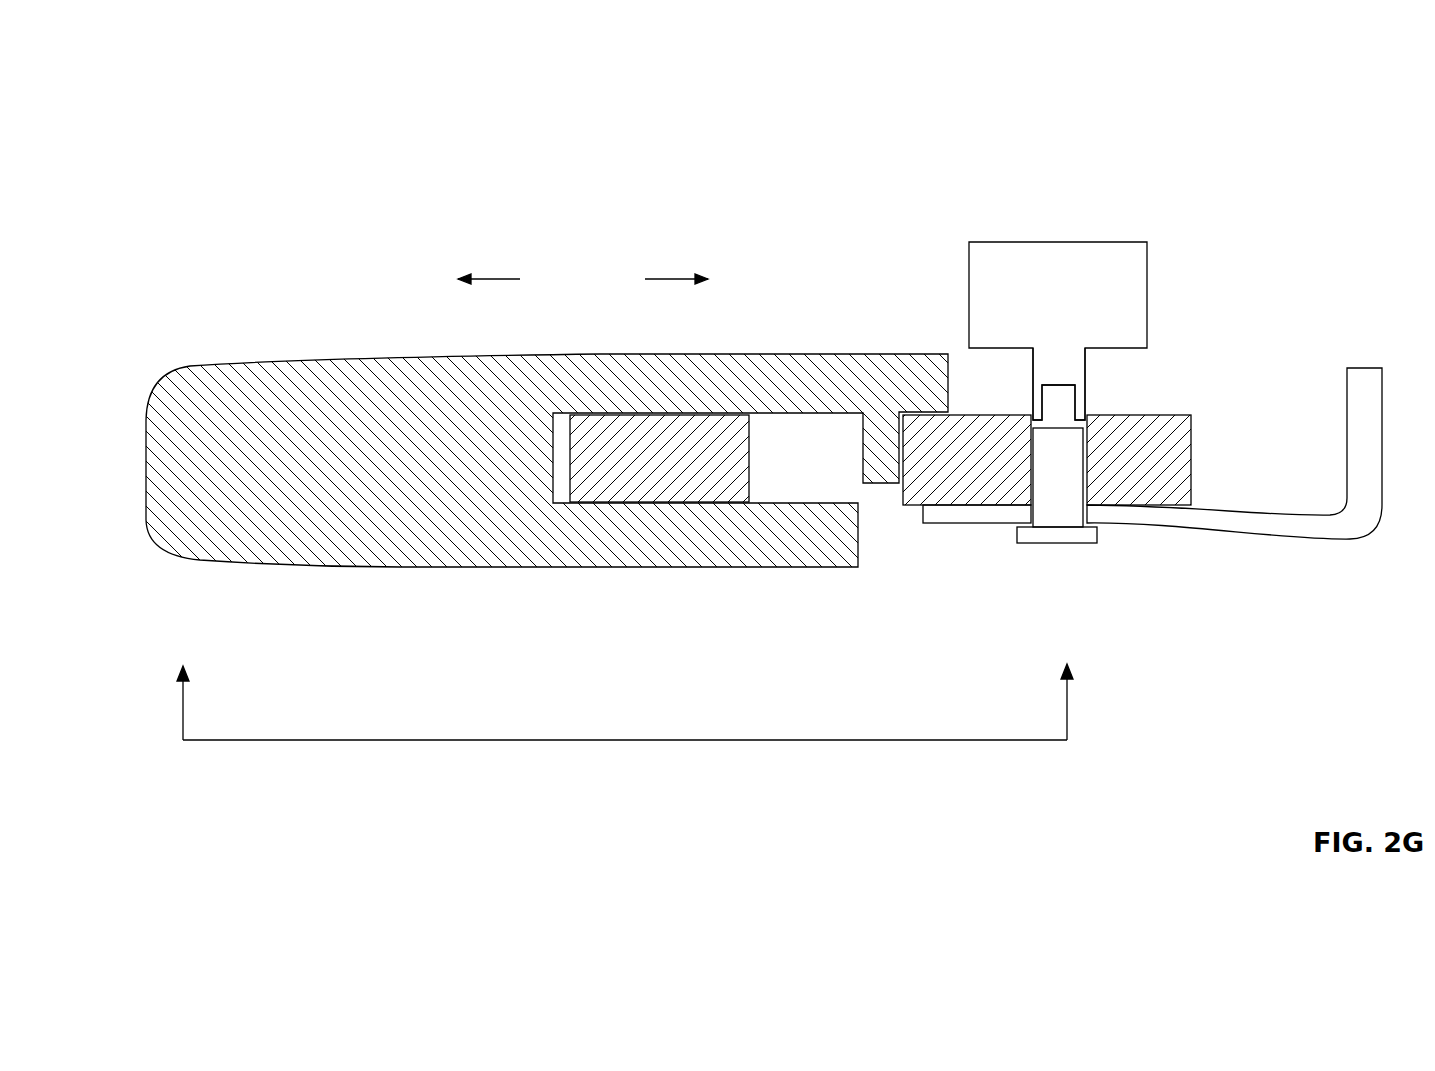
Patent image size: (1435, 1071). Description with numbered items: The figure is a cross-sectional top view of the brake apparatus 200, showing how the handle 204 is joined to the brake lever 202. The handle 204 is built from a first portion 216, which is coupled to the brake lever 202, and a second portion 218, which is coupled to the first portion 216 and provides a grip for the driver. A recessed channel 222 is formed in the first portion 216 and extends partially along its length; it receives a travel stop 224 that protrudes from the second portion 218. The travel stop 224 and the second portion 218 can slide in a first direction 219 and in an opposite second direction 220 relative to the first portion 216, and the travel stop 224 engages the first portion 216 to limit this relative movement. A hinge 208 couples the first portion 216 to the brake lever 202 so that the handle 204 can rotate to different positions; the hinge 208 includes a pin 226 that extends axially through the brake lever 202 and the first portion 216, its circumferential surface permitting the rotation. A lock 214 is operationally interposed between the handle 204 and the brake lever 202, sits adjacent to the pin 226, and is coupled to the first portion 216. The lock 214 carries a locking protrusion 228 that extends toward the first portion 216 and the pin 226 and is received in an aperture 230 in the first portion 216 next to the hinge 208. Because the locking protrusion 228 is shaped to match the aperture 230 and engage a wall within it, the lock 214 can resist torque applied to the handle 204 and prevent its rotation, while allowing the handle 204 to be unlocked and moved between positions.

The brake apparatus 200 is at (1133, 60).
The brake lever 202 is at (1275, 536).
The handle 204 is at (302, 630).
The hinge 208 is at (1057, 544).
The lock 214 is at (1072, 242).
The first portion 216 is at (755, 470).
The second portion 218 is at (420, 354).
The first direction 219 is at (490, 279).
The second direction 220 is at (670, 279).
The channel 222 is at (795, 465).
The travel stop 224 is at (862, 447).
The pin 226 is at (1085, 473).
The locking protrusion 228 is at (1086, 374).
The aperture 230 is at (1088, 448).